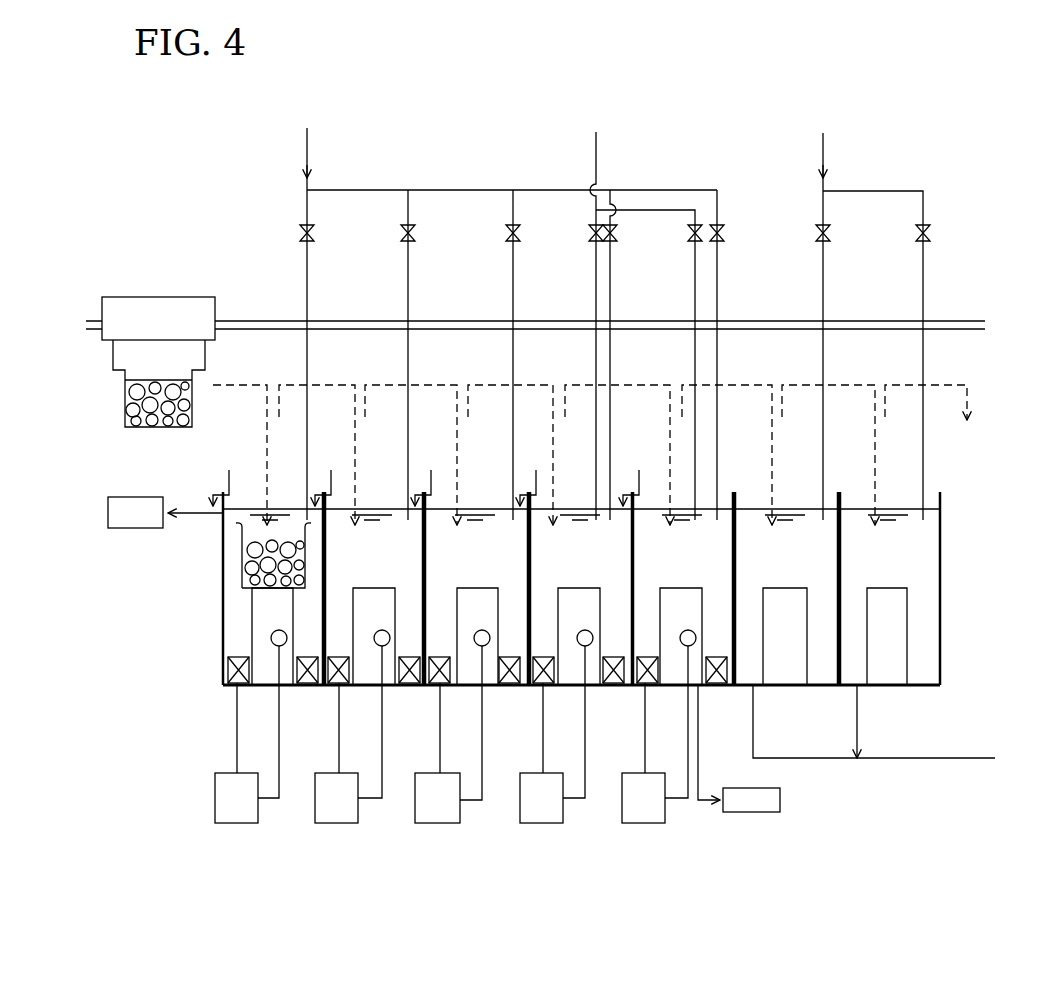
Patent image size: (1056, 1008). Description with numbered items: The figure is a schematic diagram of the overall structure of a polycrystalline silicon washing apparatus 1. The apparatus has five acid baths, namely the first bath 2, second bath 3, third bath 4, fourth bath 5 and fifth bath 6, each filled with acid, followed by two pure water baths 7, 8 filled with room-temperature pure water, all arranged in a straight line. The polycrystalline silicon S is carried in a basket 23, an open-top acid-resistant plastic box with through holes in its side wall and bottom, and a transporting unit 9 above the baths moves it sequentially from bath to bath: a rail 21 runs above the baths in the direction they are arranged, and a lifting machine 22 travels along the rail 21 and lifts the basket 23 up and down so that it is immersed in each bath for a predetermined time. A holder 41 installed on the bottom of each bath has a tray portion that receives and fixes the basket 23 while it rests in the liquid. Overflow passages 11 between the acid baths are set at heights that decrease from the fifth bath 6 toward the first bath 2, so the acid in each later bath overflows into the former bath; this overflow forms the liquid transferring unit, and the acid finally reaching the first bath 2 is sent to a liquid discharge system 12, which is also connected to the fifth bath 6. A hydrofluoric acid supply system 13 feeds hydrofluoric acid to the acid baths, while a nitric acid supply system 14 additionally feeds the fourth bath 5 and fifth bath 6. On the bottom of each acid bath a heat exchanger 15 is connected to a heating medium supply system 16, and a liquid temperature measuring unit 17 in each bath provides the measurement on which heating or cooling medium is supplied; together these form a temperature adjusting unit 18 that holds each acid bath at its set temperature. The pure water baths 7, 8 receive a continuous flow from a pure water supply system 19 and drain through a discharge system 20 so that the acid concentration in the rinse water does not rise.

The washing apparatus 1 is at (966, 192).
The first bath 2 is at (250, 503).
The second bath 3 is at (382, 503).
The third bath 4 is at (490, 503).
The fourth bath 5 is at (575, 503).
The fifth bath 6 is at (658, 500).
The pure water bath 7 is at (802, 500).
The pure water bath 8 is at (906, 500).
The transporting unit 9 is at (207, 283).
The overflow passage 11 is at (229, 480).
The liquid discharge system 12 is at (125, 520).
The hydrofluoric acid supply system 13 is at (309, 142).
The nitric acid supply system 14 is at (596, 140).
The heat exchanger 15 is at (230, 688).
The heating medium supply system 16 is at (287, 638).
The liquid temperature measuring unit 17 is at (232, 823).
The temperature adjusting unit 18 is at (208, 778).
The pure water supply system 19 is at (824, 152).
The discharge system 20 is at (913, 760).
The rail 21 is at (958, 322).
The lifting machine 22 is at (150, 297).
The basket 23 is at (125, 393).
The holder 41 is at (251, 632).
The polycrystalline silicon S is at (140, 405).